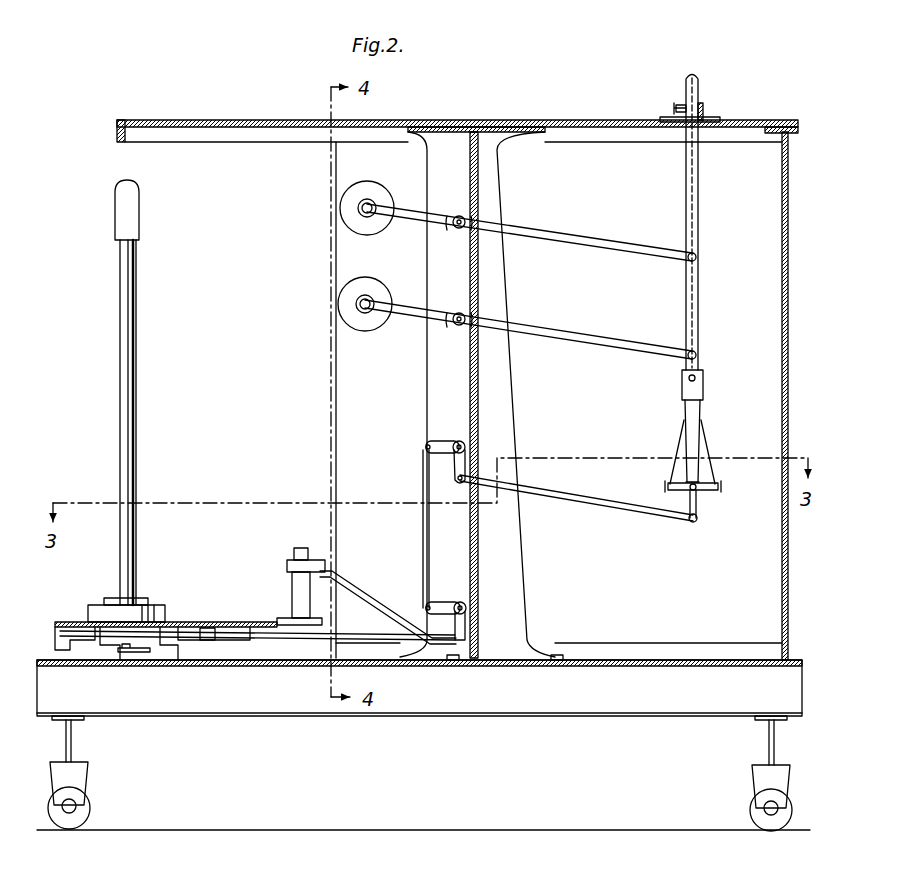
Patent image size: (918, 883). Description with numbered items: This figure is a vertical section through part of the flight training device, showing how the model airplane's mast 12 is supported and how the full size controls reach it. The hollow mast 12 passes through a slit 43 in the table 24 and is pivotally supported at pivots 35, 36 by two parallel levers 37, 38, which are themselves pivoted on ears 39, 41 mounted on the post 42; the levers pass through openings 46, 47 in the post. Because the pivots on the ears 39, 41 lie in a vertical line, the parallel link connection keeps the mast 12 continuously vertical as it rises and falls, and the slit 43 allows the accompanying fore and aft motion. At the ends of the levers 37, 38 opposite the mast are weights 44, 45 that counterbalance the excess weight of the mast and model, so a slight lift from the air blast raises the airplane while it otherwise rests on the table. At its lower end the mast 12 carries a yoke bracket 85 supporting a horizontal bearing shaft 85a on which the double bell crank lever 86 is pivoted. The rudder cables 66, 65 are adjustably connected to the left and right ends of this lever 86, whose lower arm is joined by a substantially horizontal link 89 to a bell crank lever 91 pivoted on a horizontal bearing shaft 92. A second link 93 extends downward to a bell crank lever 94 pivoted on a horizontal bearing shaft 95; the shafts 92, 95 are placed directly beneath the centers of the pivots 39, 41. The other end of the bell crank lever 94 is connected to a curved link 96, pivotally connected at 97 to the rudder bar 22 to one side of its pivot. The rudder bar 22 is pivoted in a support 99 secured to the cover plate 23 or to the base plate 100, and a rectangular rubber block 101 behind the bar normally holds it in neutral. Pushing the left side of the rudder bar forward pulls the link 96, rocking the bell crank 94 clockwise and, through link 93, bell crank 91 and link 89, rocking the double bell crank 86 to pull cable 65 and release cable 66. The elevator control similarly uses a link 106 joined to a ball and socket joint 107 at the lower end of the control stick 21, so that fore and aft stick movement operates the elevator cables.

The mast 12 is at (699, 92).
The control stick 21 is at (140, 410).
The rudder bar 22 is at (280, 564).
The cover plate 23 is at (188, 605).
The table 24 is at (560, 120).
The pivot 35 is at (700, 257).
The pivot 36 is at (700, 355).
The parallel lever 37 is at (575, 232).
The parallel lever 38 is at (560, 330).
The ear 39 is at (459, 214).
The ear 41 is at (459, 311).
The post 42 is at (520, 410).
The slit 43 is at (700, 128).
The weight 44 is at (340, 203).
The weight 45 is at (340, 300).
The opening 46 is at (472, 220).
The opening 47 is at (474, 316).
The cable 65 is at (710, 456).
The cable 66 is at (676, 456).
The yoke bracket 85 is at (704, 392).
The horizontal bearing shaft 85a is at (702, 494).
The double bell crank lever 86 is at (697, 525).
The link 89 is at (604, 512).
The bell crank lever 91 is at (436, 443).
The horizontal bearing shaft 92 is at (460, 440).
The link 93 is at (424, 502).
The bell crank lever 94 is at (440, 604).
The horizontal bearing shaft 95 is at (468, 610).
The curved link 96 is at (395, 584).
The pivotal connection 97 is at (286, 566).
The support 99 is at (290, 594).
The base plate 100 is at (218, 666).
The rubber block 101 is at (306, 548).
The link 106 is at (312, 640).
The ball and socket joint 107 is at (128, 655).